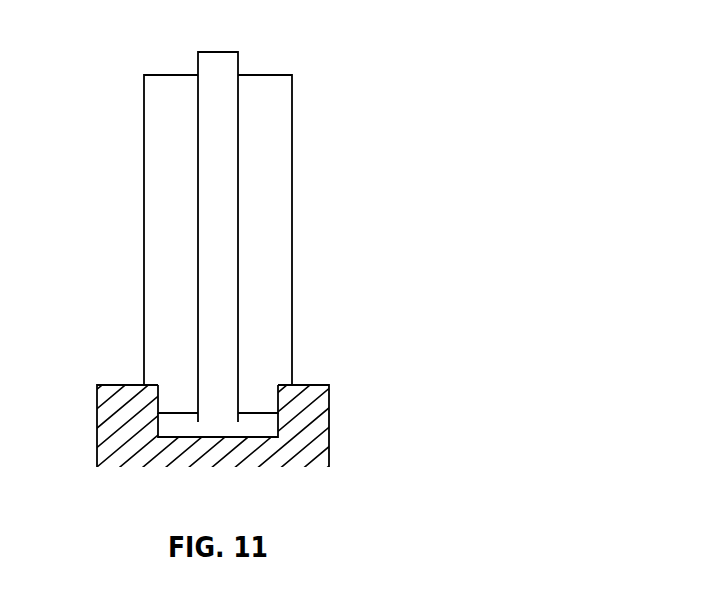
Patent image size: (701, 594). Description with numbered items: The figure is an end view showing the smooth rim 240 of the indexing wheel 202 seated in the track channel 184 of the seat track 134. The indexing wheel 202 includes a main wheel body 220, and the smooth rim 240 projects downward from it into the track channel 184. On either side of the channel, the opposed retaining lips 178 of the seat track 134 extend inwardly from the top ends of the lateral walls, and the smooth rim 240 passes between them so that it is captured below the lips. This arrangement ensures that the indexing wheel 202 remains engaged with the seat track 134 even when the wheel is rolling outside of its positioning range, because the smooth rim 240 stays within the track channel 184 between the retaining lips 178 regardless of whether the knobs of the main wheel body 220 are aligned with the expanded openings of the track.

The seat track 134 is at (329, 425).
The retaining lip 178 is at (168, 393).
The track channel 184 is at (175, 428).
The indexing wheel 202 is at (264, 237).
The main wheel body 220 is at (292, 318).
The smooth rim 240 is at (238, 168).